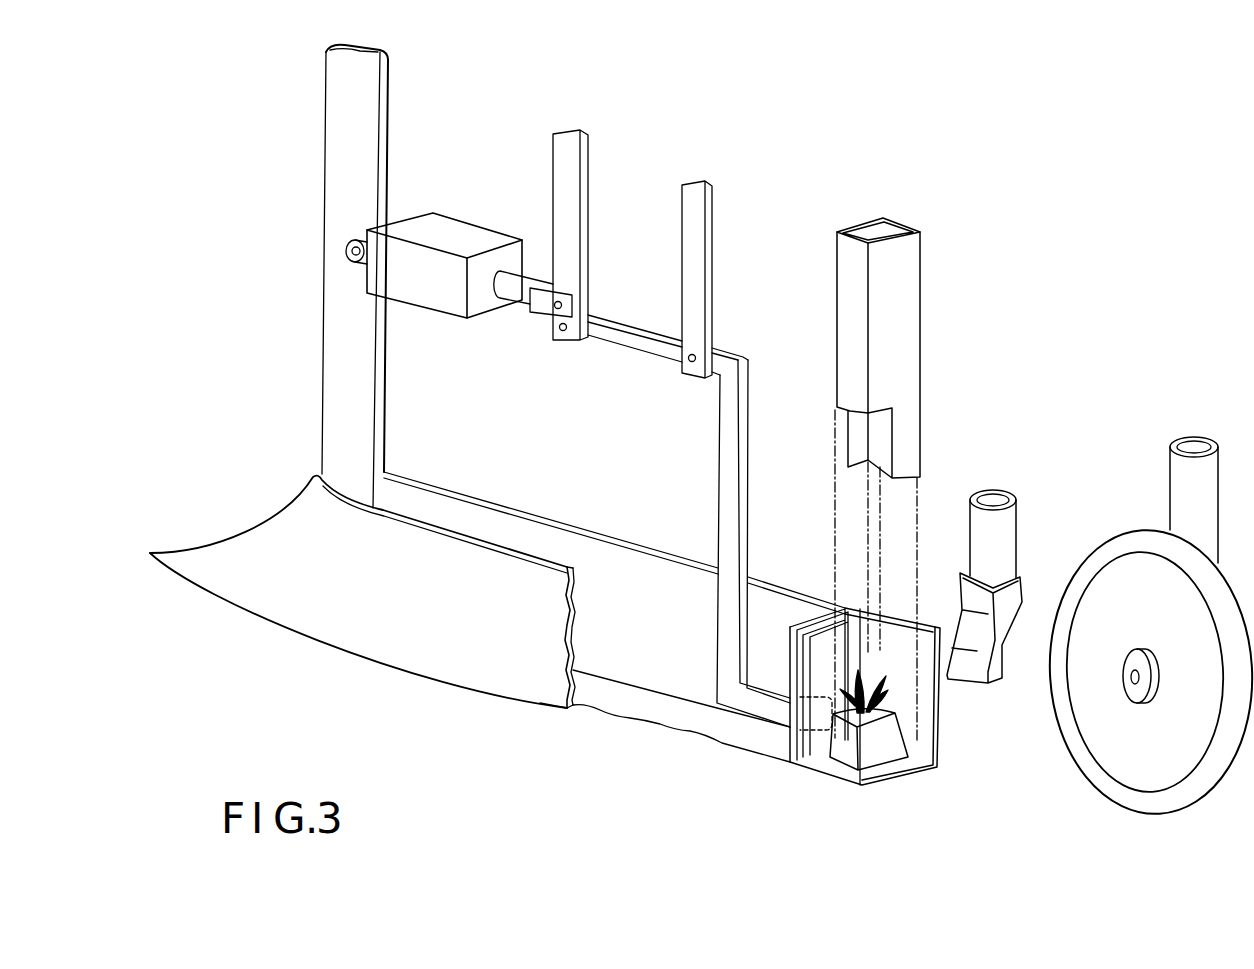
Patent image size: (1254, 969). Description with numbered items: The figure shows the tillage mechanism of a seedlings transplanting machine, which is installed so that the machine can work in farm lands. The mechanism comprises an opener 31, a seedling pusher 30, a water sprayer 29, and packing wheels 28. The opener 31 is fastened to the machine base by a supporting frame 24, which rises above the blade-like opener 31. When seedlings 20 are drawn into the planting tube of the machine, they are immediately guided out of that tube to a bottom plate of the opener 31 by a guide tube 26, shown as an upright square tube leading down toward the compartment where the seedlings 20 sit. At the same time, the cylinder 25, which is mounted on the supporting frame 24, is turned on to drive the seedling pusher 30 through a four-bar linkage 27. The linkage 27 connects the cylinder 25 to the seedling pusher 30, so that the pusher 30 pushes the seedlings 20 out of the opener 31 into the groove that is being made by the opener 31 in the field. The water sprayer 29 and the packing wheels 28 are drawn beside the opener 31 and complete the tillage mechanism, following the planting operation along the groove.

The seedlings 20 is at (855, 745).
The supporting frame 24 is at (352, 312).
The cylinder 25 is at (422, 267).
The guide tube 26 is at (853, 270).
The four-bar linkage 27 is at (728, 407).
The packing wheels 28 is at (1153, 799).
The water sprayer 29 is at (983, 670).
The seedling pusher 30 is at (795, 757).
The opener 31 is at (487, 655).